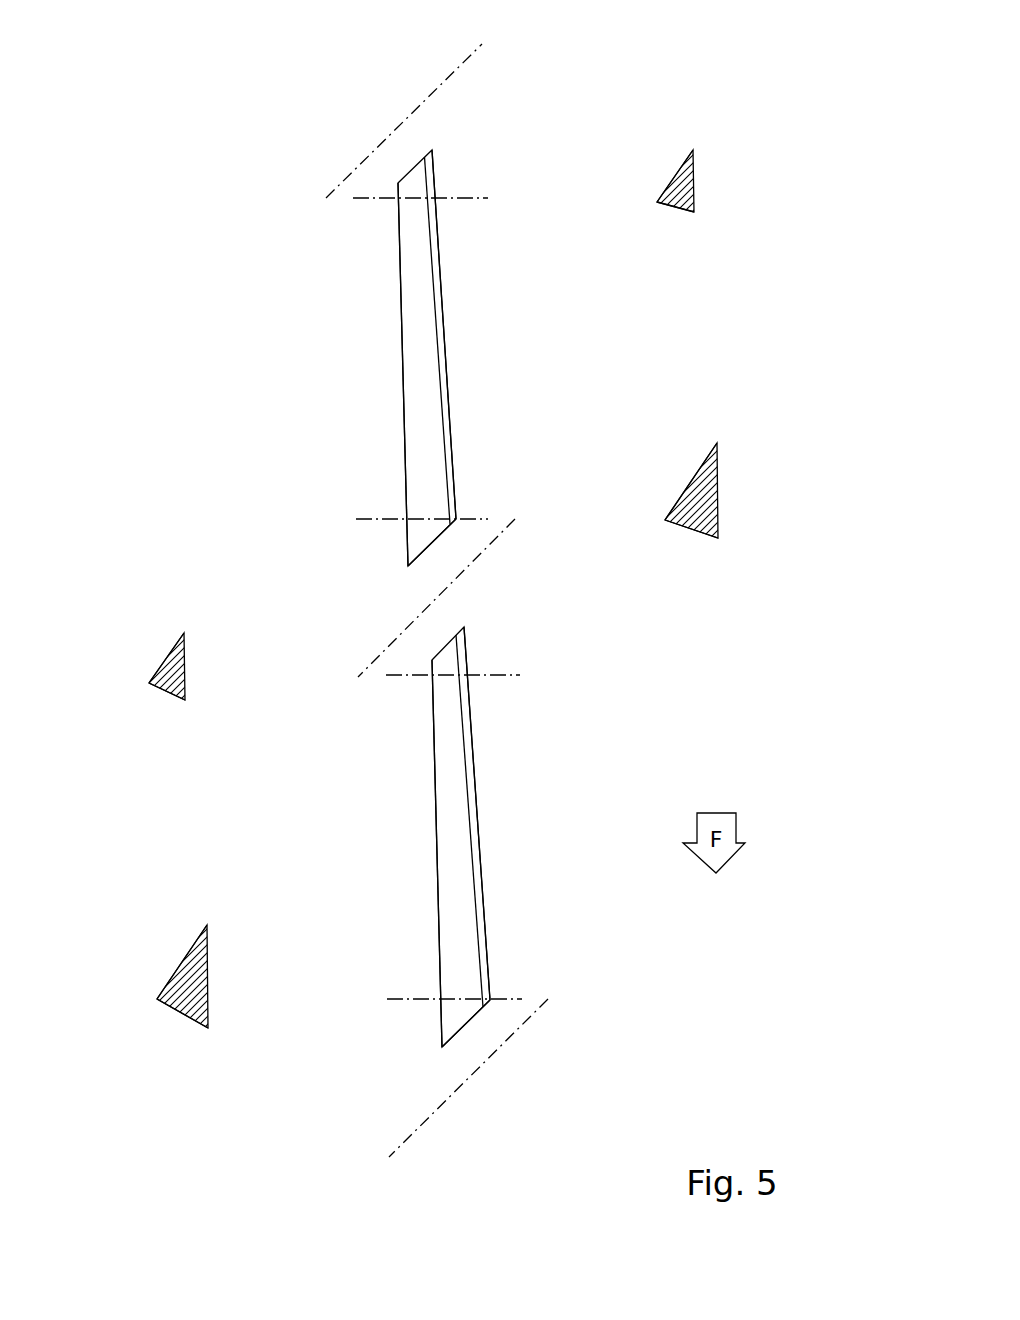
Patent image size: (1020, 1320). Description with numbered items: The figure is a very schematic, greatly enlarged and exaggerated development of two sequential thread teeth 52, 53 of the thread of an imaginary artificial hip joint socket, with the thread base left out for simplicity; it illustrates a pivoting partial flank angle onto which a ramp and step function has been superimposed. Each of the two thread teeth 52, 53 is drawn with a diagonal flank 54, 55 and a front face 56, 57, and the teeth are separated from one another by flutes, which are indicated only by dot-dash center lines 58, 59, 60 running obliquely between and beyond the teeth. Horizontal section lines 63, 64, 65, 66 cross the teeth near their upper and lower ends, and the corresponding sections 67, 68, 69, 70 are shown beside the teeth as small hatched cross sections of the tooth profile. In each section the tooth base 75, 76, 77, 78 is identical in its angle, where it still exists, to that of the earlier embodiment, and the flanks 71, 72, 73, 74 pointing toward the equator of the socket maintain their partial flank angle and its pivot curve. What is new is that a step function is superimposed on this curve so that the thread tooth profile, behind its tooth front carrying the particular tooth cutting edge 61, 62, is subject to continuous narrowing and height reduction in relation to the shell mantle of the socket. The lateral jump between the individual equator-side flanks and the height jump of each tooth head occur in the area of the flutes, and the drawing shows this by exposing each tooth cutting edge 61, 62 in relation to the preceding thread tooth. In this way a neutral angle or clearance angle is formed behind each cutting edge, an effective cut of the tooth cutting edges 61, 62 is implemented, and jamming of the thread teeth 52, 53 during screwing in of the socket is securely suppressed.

The thread tooth 52 is at (498, 888).
The thread tooth 53 is at (467, 408).
The diagonal flank 54 is at (448, 838).
The diagonal flank 55 is at (415, 358).
The front face 56 is at (471, 784).
The front face 57 is at (438, 306).
The dot-dash center line 58 is at (484, 1063).
The dot-dash center line 59 is at (451, 582).
The dot-dash center line 60 is at (420, 105).
The tooth cutting edge 61 is at (461, 1027).
The tooth cutting edge 62 is at (428, 547).
The section line 63 is at (435, 1000).
The section line 64 is at (472, 677).
The section line 65 is at (401, 520).
The section line 66 is at (439, 199).
The section 67 is at (222, 970).
The section 68 is at (200, 662).
The section 69 is at (735, 487).
The section 70 is at (710, 179).
The flank pointing toward the equator 71 is at (175, 970).
The flank pointing toward the equator 72 is at (160, 662).
The flank pointing toward the equator 73 is at (685, 487).
The flank pointing toward the equator 74 is at (668, 180).
The tooth base 75 is at (181, 1013).
The tooth base 76 is at (166, 692).
The tooth base 77 is at (692, 528).
The tooth base 78 is at (674, 206).